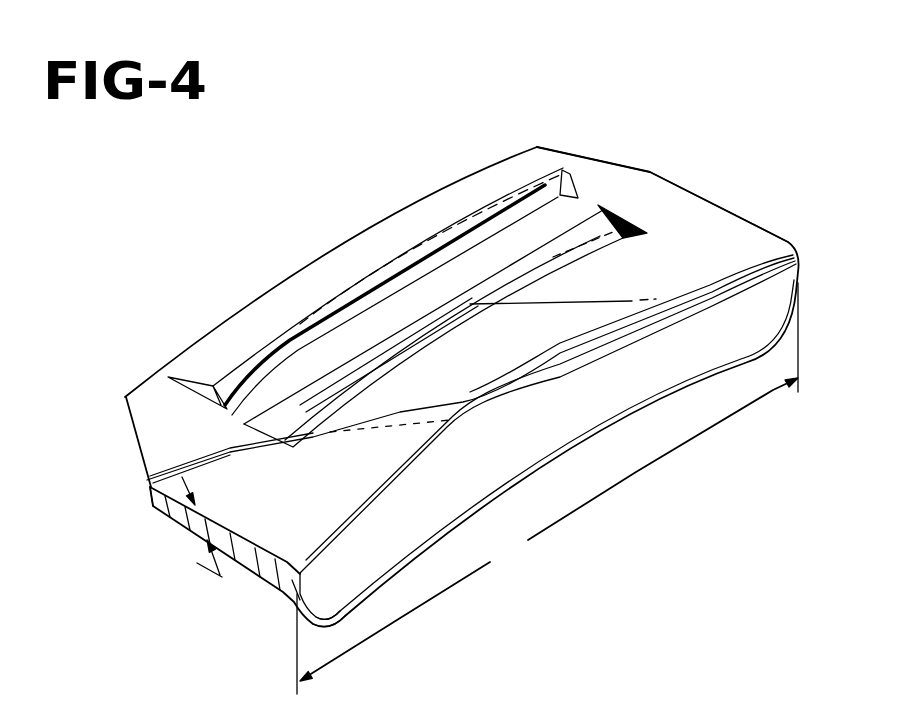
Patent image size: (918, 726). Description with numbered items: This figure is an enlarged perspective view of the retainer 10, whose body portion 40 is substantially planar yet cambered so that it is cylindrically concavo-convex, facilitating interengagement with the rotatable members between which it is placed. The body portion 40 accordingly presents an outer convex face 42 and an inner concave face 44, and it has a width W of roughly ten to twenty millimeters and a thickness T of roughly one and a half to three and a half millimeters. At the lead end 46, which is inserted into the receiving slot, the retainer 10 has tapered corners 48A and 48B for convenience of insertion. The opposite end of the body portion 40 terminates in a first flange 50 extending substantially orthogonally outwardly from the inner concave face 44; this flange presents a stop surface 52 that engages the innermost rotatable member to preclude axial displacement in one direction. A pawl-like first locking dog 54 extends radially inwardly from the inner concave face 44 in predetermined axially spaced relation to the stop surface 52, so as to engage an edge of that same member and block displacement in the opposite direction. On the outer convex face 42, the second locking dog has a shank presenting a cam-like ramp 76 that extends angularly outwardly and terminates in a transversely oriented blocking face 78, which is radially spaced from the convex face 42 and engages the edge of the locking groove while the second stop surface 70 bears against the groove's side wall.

The retainer 10 is at (800, 213).
The body portion 40 is at (290, 522).
The outer convex face 42 is at (689, 217).
The inner concave face 44 is at (170, 513).
The lead end 46 is at (328, 244).
The tapered corner 48A is at (138, 455).
The tapered corner 48B is at (583, 162).
The first flange 50 is at (533, 433).
The stop surface 52 is at (290, 594).
The first locking dog 54 is at (478, 286).
The second stop surface 70 is at (290, 268).
The cam-like ramp 76 is at (405, 235).
The blocking face 78 is at (300, 334).
The thickness T is at (199, 527).
The width W is at (549, 482).